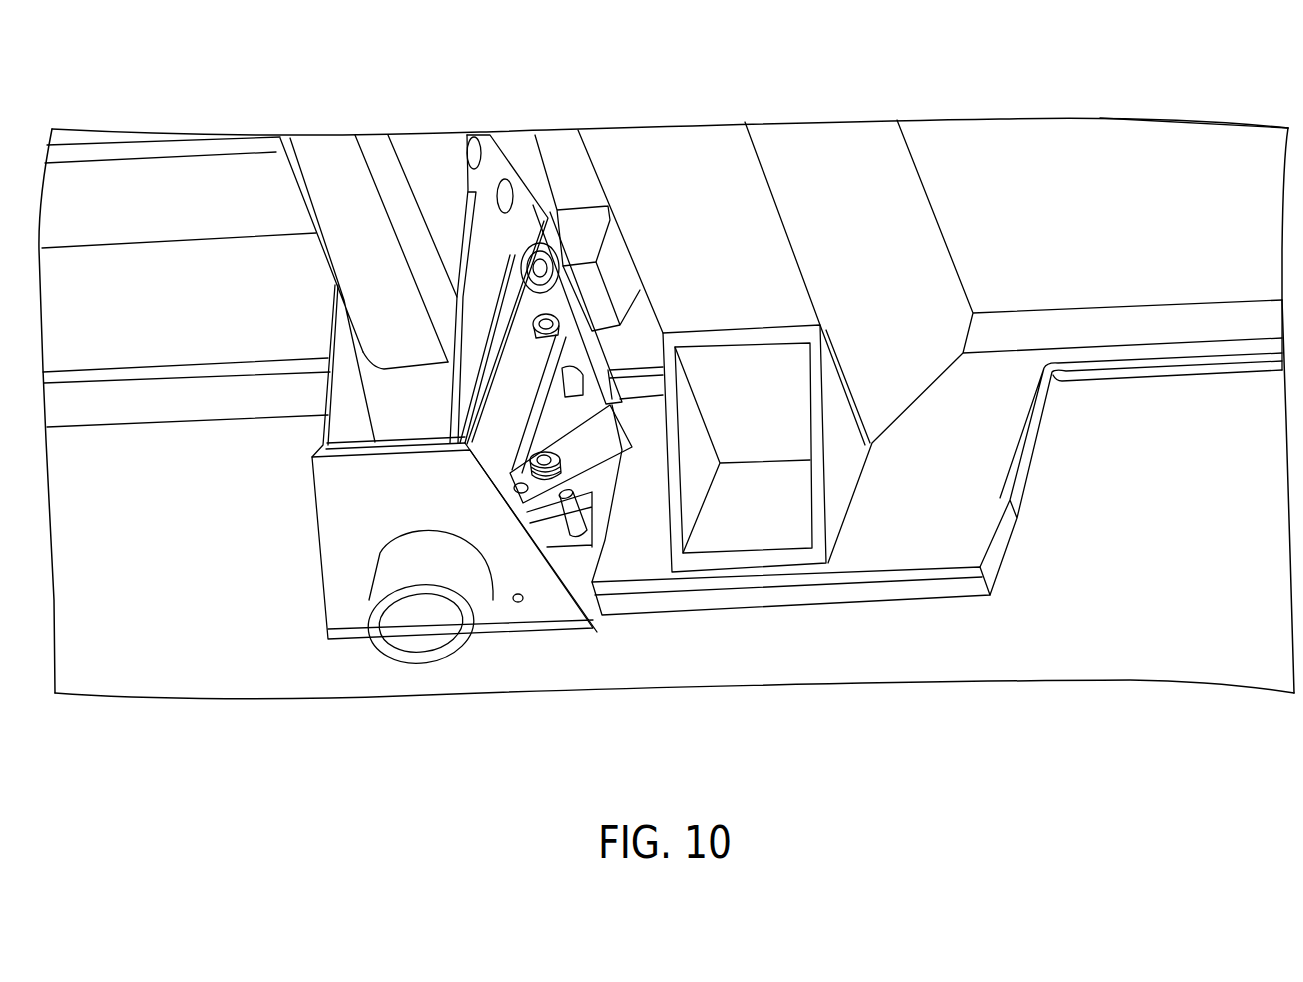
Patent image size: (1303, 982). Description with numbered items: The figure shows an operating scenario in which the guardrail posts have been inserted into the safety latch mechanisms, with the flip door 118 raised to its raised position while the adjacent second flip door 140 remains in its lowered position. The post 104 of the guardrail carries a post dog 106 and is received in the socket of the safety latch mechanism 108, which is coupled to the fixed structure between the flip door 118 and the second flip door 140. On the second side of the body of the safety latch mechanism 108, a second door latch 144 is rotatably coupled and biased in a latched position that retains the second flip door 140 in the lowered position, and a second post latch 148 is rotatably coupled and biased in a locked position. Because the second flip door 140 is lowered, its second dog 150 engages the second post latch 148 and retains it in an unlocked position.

The post 104 is at (443, 582).
The post dog 106 is at (555, 425).
The safety latch mechanism 108 is at (318, 670).
The flip door 118 is at (70, 143).
The second flip door 140 is at (1217, 137).
The second door latch 144 is at (582, 458).
The second post latch 148 is at (590, 348).
The second dog 150 is at (588, 280).